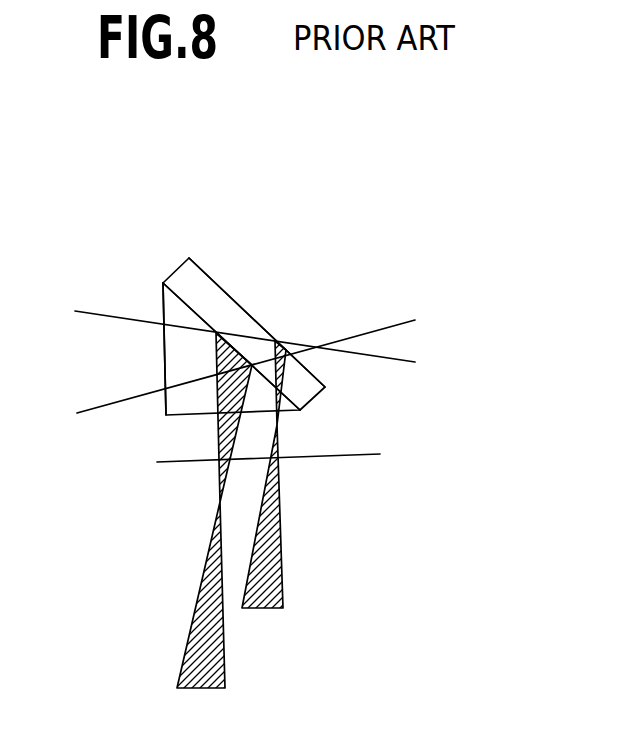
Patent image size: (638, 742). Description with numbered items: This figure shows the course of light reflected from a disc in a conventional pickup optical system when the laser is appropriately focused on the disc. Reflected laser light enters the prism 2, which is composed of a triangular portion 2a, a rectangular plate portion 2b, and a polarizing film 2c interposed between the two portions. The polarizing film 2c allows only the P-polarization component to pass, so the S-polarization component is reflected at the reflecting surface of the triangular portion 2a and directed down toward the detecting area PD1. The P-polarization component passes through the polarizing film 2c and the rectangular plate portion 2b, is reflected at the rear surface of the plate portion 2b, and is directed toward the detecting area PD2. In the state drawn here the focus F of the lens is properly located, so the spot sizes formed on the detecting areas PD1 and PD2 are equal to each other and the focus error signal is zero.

The prism 2 is at (235, 255).
The triangular portion 2a is at (164, 304).
The rectangular plate portion 2b is at (247, 310).
The polarizing film 2c is at (188, 298).
The focus F is at (319, 322).
The detecting area PD1 is at (210, 510).
The detecting area PD2 is at (288, 474).